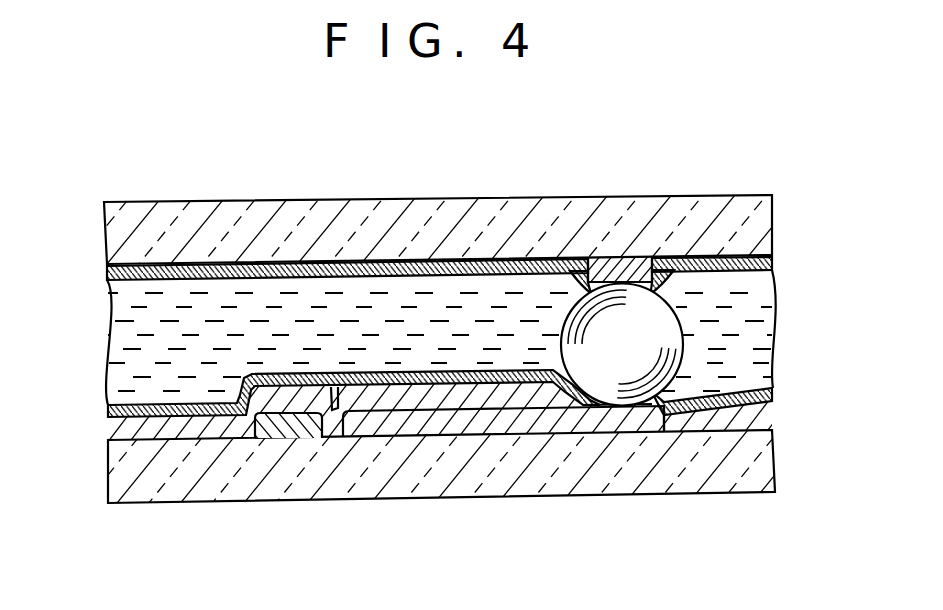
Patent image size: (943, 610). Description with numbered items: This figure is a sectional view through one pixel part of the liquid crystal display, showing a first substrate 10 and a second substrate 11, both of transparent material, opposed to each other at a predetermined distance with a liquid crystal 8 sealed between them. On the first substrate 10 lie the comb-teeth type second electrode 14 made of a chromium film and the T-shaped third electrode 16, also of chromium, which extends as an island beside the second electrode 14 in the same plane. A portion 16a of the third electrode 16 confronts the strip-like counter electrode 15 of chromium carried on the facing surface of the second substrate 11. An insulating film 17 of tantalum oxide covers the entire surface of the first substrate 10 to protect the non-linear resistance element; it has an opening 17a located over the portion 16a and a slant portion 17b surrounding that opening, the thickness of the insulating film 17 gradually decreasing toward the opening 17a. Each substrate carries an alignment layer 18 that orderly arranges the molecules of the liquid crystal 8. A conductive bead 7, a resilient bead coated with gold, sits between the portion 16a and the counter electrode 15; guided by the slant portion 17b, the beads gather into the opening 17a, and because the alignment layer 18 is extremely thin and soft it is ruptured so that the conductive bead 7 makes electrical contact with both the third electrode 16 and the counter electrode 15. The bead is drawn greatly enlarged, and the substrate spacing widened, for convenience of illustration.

The conductive bead 7 is at (673, 318).
The liquid crystal 8 is at (113, 343).
The first substrate 10 is at (767, 457).
The second substrate 11 is at (773, 220).
The second electrode 14 is at (287, 438).
The counter electrode 15 is at (620, 257).
The third electrode 16 is at (453, 437).
The portion of third electrode 16a is at (612, 433).
The insulating film 17 is at (110, 437).
The opening 17a is at (645, 433).
The slant portion 17b is at (562, 373).
The alignment layer 18 is at (773, 264).